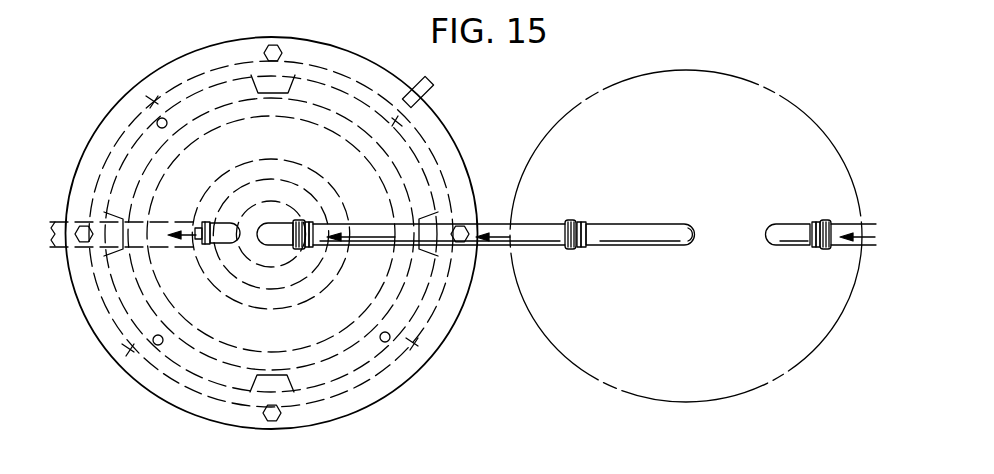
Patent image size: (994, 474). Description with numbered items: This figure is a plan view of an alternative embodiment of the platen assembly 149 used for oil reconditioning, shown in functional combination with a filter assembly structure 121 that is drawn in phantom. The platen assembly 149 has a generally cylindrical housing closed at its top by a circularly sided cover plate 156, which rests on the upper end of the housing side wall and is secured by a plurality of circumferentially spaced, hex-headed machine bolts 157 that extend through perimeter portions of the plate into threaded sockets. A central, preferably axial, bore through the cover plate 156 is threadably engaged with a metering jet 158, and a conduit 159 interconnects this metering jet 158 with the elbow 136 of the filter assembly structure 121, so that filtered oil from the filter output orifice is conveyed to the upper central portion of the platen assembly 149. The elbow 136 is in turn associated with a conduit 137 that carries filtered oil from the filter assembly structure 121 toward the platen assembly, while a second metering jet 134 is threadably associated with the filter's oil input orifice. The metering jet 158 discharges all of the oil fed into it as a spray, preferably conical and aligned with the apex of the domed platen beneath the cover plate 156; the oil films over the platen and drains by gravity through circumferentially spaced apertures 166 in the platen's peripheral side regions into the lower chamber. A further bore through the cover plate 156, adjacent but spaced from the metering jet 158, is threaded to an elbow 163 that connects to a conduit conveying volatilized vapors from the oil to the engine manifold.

The filter assembly structure 121 is at (692, 66).
The metering jet 134 is at (787, 228).
The elbow 136 is at (660, 221).
The conduit 137 is at (850, 223).
The platen assembly 149 is at (357, 52).
The cover plate 156 is at (203, 60).
The hex-headed machine bolts 157 is at (283, 413).
The metering jet 158 is at (280, 224).
The conduit 159 is at (370, 223).
The elbow 163 is at (226, 222).
The apertures 166 is at (158, 118).